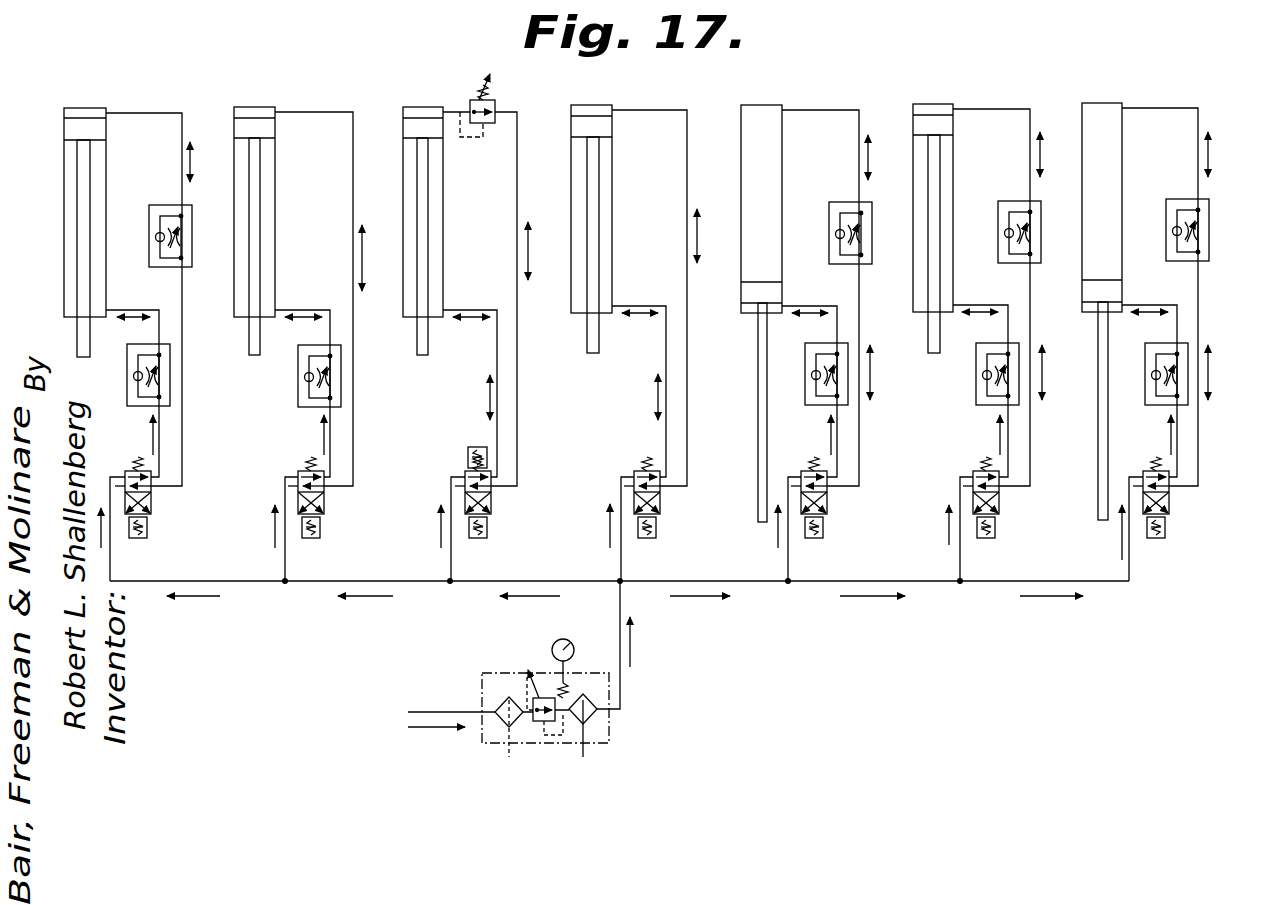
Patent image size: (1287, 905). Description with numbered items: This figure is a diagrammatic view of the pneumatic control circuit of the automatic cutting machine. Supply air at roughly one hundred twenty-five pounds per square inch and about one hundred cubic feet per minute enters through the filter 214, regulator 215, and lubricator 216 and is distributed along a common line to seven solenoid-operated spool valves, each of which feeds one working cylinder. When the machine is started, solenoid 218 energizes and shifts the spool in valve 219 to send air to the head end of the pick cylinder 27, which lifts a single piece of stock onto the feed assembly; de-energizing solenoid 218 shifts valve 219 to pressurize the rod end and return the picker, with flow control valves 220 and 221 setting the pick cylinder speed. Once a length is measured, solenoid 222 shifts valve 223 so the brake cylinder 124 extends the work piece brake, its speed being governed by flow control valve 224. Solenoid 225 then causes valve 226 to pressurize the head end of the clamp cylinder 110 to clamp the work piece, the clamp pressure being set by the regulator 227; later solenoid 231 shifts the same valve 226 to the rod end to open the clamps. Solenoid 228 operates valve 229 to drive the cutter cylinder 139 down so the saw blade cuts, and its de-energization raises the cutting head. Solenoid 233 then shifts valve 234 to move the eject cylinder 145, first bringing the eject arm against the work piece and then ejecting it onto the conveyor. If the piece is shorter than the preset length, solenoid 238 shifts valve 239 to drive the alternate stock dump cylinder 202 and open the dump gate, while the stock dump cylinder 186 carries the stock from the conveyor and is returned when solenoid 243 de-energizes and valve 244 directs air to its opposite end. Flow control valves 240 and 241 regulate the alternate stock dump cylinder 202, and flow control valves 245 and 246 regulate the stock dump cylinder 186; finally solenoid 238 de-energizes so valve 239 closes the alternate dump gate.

The pick cylinder 27 is at (64, 234).
The brake cylinder 124 is at (268, 236).
The clamp cylinder 110 is at (433, 223).
The cutter cylinder 139 is at (607, 252).
The eject cylinder 145 is at (770, 178).
The stock dump cylinder 186 is at (950, 158).
The alternate stock dump cylinder 202 is at (1114, 173).
The flow control valve 221 is at (165, 205).
The flow control valve 220 is at (128, 390).
The valve 219 is at (151, 505).
The solenoid 218 is at (147, 528).
The flow control valve 224 is at (298, 398).
The valve 223 is at (321, 505).
The solenoid 222 is at (320, 528).
The regulator 227 is at (498, 110).
The solenoid 231 is at (468, 456).
The valve 226 is at (490, 505).
The solenoid 225 is at (487, 528).
The valve 229 is at (660, 505).
The solenoid 228 is at (656, 528).
The flow control valve 245 is at (870, 216).
The flow control valve 246 is at (1010, 186).
The valve 234 is at (828, 505).
The solenoid 233 is at (823, 528).
The valve 244 is at (999, 505).
The solenoid 243 is at (995, 527).
The flow control valve 241 is at (1210, 232).
The flow control valve 240 is at (1150, 400).
The valve 239 is at (1169, 505).
The solenoid 238 is at (1166, 527).
The filter 214 is at (503, 743).
The regulator 215 is at (547, 735).
The lubricator 216 is at (592, 723).